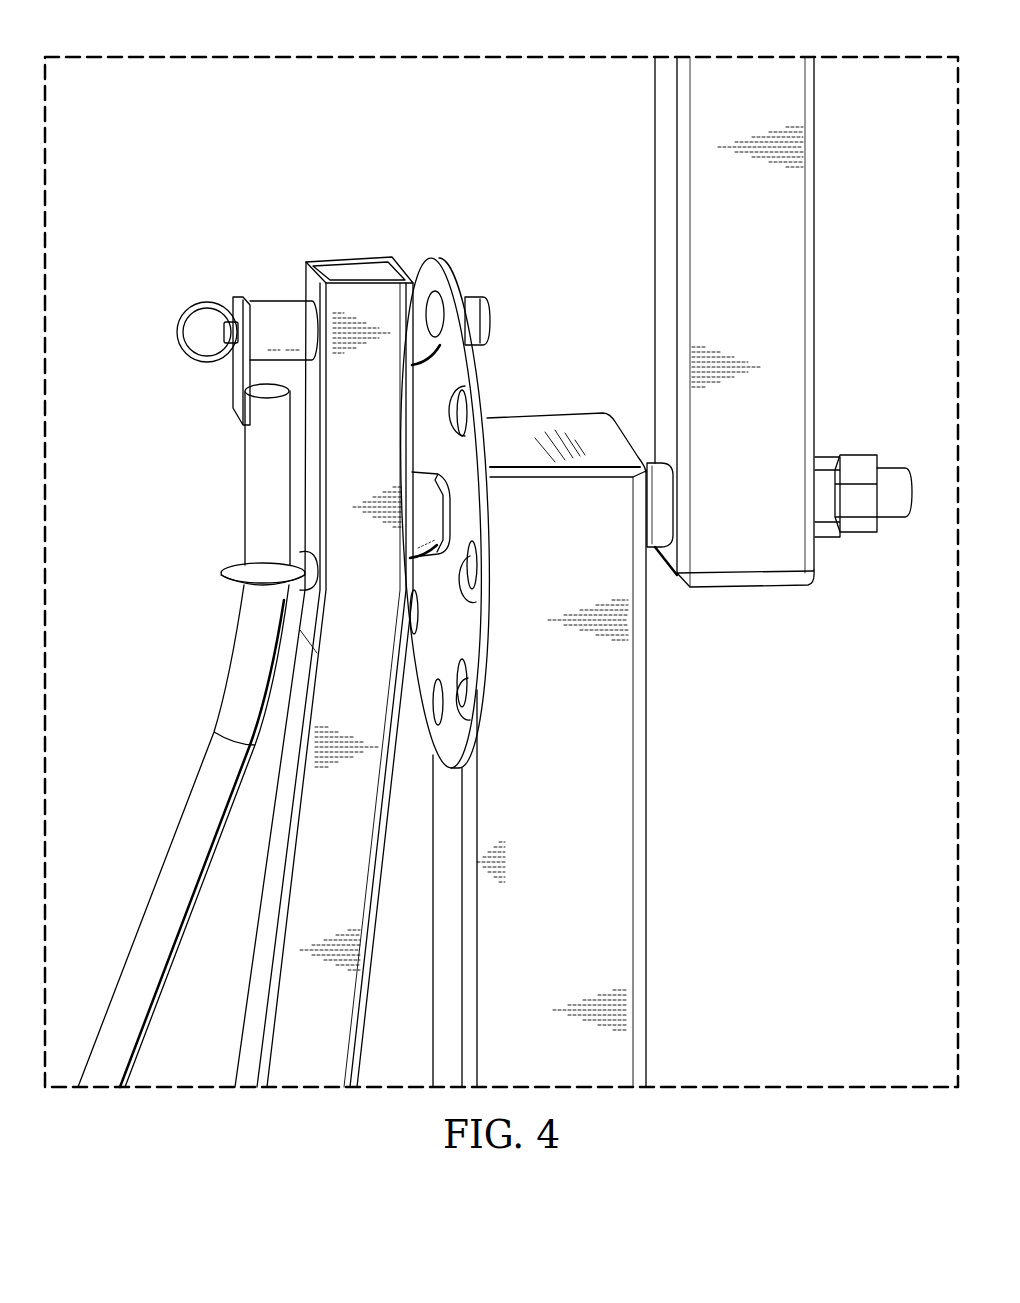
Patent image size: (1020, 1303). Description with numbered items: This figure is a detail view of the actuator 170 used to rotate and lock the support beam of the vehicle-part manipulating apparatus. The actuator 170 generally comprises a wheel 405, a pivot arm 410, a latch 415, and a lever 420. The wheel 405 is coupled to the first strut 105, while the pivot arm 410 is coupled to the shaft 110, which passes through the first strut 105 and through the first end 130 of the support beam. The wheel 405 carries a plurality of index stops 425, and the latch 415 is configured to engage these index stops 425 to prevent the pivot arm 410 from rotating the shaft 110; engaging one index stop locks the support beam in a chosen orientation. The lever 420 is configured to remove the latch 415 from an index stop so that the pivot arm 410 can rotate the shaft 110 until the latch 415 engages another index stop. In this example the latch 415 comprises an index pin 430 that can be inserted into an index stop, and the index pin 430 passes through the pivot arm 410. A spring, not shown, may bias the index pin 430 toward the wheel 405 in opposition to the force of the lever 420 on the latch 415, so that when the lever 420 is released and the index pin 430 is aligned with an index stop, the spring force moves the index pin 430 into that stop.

The first strut 105 is at (652, 931).
The shaft 110 is at (890, 468).
The first end 130 is at (817, 263).
The actuator 170 is at (204, 152).
The wheel 405 is at (432, 262).
The pivot arm 410 is at (242, 1032).
The latch 415 is at (238, 385).
The lever 420 is at (166, 859).
The index stops 425 is at (440, 294).
The index pin 430 is at (221, 333).